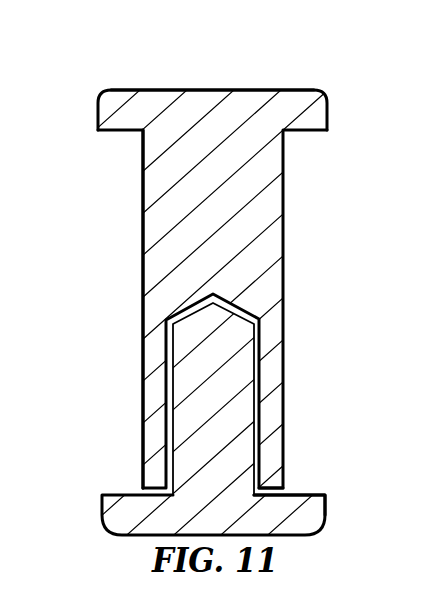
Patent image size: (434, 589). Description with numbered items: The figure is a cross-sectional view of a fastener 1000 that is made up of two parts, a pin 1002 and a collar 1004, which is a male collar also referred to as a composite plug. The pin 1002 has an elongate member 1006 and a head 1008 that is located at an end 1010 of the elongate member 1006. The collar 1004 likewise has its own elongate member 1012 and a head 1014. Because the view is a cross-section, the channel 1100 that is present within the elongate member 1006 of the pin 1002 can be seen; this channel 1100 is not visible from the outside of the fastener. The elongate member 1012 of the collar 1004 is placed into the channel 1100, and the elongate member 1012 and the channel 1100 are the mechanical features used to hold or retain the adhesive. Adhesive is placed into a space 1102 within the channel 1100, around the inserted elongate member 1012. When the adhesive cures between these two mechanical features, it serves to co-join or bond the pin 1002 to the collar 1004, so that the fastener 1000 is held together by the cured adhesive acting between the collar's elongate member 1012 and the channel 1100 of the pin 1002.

The fastener 1000 is at (244, 76).
The pin 1002 is at (268, 202).
The collar 1004 is at (112, 528).
The elongate member 1006 is at (143, 189).
The head 1008 is at (109, 91).
The end 1010 is at (160, 90).
The elongate member 1012 is at (217, 380).
The head 1014 is at (327, 504).
The channel 1100 is at (186, 304).
The space 1102 is at (254, 419).